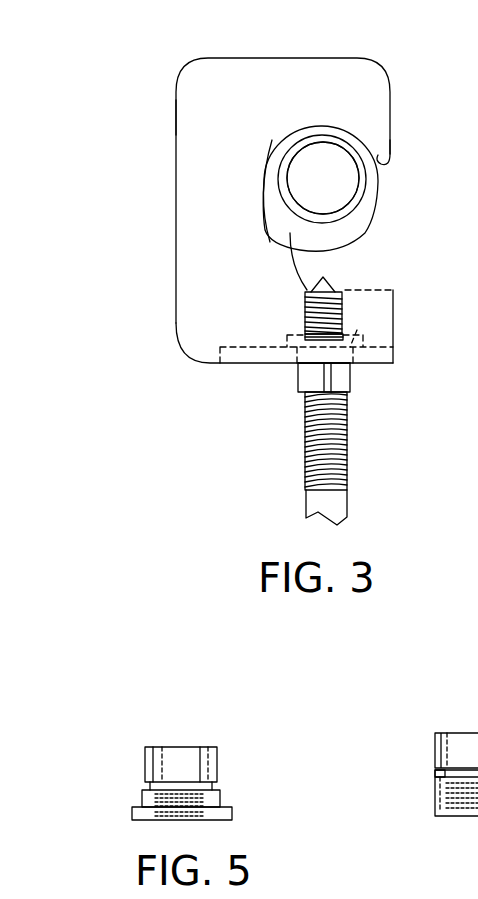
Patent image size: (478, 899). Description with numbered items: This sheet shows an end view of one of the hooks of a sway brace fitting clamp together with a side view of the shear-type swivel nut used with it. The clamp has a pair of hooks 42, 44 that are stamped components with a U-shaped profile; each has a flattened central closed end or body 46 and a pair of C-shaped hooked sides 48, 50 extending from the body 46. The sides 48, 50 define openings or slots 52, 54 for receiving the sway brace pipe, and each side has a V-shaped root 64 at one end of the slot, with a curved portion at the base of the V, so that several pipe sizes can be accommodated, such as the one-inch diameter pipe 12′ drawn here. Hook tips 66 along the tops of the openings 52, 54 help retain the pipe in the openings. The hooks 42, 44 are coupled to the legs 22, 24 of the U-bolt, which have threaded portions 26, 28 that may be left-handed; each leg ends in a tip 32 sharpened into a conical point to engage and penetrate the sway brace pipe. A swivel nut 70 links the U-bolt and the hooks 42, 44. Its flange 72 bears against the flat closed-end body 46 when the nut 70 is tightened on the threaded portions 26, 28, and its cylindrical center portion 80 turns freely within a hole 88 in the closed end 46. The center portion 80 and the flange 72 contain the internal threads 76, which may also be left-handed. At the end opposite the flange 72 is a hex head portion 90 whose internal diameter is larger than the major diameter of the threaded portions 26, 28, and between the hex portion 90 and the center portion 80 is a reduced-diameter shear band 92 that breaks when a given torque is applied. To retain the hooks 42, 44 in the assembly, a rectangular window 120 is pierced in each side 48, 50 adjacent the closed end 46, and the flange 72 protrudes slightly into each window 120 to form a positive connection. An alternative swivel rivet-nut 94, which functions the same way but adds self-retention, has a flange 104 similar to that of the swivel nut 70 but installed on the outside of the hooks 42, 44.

In FIG. 3, the hook 42 is at (241, 188).
In FIG. 3, the hook 44 is at (163, 78).
In FIG. 3, the hooked side 48 is at (143, 126).
In FIG. 3, the hooked side 50 is at (195, 113).
In FIG. 3, the hook tip 66 is at (382, 160).
In FIG. 3, the V-shaped root 64 is at (287, 143).
In FIG. 3, the opening or slot 52 is at (370, 188).
In FIG. 3, the opening or slot 54 is at (386, 222).
In FIG. 3, the 1 inch diameter pipe 12′ is at (296, 203).
In FIG. 3, the tip 32 is at (338, 279).
In FIG. 3, the rectangular window 120 is at (306, 335).
In FIG. 3, the central body 46 is at (380, 353).
In FIG. 3, the flange 72 is at (357, 330).
In FIG. 5, the flange 72 is at (129, 801).
In FIG. 3, the hole 88 is at (355, 349).
In FIG. 3, the threaded portion 26 is at (391, 441).
In FIG. 3, the threaded portion 28 is at (354, 444).
In FIG. 3, the leg 22 is at (392, 517).
In FIG. 3, the leg 24 is at (355, 497).
In FIG. 3, the swivel nut 70 is at (278, 388).
In FIG. 5, the swivel nut 70 is at (177, 733).
In FIG. 5, the hex head portion 90 is at (223, 757).
In FIG. 5, the shear band 92 is at (224, 786).
In FIG. 5, the center portion 80 is at (225, 796).
In FIG. 5, the threads 76 is at (190, 820).
In FIG. 5, the swivel rivet-nut 94 is at (461, 717).
In FIG. 5, the flange 104 is at (431, 786).